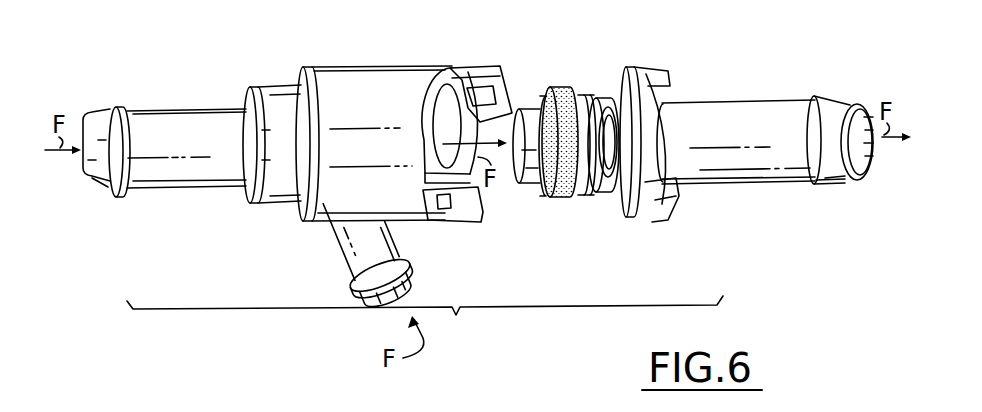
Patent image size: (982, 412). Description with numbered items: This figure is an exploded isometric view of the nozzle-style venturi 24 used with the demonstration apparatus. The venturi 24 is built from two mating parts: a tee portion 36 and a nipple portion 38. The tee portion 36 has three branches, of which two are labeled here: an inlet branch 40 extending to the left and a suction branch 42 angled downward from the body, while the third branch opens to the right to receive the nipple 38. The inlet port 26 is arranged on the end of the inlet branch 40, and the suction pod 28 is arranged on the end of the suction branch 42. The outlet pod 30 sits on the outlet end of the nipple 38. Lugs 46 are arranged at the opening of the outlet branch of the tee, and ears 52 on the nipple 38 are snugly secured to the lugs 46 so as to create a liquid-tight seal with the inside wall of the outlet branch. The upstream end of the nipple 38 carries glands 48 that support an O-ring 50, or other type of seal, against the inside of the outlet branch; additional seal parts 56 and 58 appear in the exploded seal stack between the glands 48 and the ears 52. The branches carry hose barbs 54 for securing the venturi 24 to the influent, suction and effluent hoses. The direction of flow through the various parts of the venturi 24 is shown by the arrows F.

The venturi 24 is at (508, 53).
The inlet port 26 is at (77, 175).
The suction pod 28 is at (405, 300).
The outlet pod 30 is at (862, 160).
The tee portion 36 is at (272, 210).
The nipple portion 38 is at (762, 108).
The inlet branch 40 is at (181, 121).
The suction branch 42 is at (347, 247).
The lugs 46 is at (477, 68).
The glands 48 is at (598, 92).
The O-ring 50 is at (575, 200).
The ears 52 is at (673, 85).
The hose barbs 54 is at (110, 110).
The seal support ring 56 is at (533, 184).
The retainer tab 58 is at (678, 208).